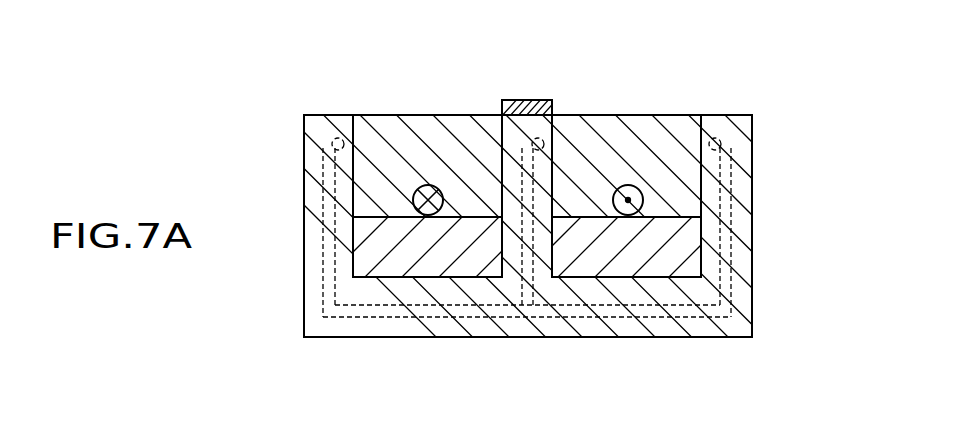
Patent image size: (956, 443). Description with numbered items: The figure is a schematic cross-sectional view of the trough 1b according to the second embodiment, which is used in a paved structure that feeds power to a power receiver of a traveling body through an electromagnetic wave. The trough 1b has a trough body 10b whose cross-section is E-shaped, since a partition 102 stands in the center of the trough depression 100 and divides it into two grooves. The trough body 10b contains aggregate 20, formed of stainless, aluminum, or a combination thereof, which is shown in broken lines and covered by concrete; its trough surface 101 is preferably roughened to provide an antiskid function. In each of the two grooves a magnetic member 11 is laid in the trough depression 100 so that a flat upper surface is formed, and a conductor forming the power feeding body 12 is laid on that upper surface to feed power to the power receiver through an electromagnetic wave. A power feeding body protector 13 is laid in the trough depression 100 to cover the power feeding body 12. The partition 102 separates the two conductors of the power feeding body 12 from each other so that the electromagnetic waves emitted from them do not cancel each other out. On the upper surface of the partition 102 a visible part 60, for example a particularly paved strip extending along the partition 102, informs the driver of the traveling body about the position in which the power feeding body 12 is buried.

The trough 1b is at (816, 92).
The trough body 10b is at (752, 195).
The magnetic member 11 is at (465, 262).
The power feeding body 12 is at (428, 187).
The power feeding body protector 13 is at (680, 125).
The aggregate 20 is at (567, 313).
The visible part 60 is at (530, 100).
The trough depression 100 is at (425, 275).
The trough surface 101 is at (330, 115).
The partition 102 is at (520, 125).